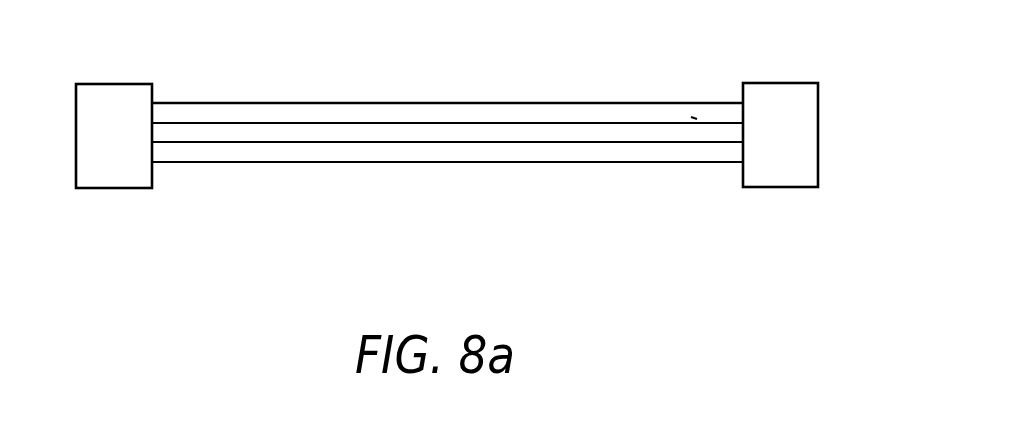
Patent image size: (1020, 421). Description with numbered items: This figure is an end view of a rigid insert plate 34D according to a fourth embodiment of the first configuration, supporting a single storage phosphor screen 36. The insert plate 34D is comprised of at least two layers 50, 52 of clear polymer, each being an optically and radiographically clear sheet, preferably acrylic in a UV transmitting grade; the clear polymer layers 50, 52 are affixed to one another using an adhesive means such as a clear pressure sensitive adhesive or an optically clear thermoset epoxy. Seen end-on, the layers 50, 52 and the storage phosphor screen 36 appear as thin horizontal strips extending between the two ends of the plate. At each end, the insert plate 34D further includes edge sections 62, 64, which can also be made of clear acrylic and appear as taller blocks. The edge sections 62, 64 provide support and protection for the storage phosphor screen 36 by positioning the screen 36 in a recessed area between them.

The edge section 64 is at (116, 96).
The edge section 62 is at (792, 96).
The storage phosphor screen 36 is at (517, 101).
The clear polymer layer 52 is at (367, 123).
The insert plate 34D is at (517, 163).
The clear polymer layer 50 is at (218, 163).